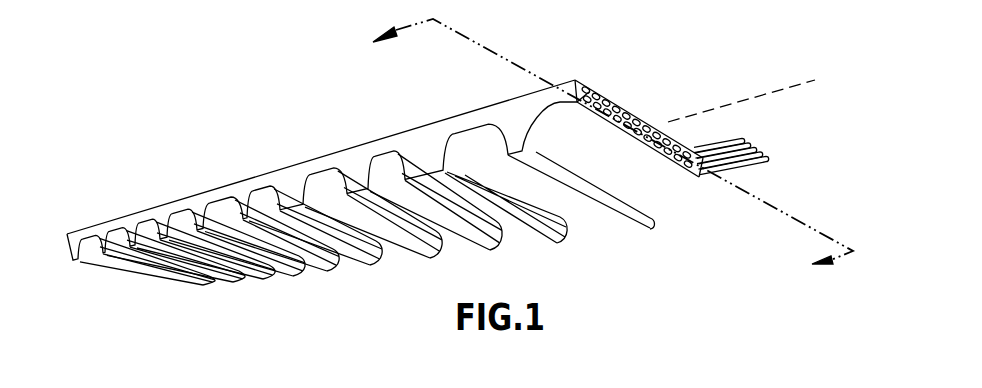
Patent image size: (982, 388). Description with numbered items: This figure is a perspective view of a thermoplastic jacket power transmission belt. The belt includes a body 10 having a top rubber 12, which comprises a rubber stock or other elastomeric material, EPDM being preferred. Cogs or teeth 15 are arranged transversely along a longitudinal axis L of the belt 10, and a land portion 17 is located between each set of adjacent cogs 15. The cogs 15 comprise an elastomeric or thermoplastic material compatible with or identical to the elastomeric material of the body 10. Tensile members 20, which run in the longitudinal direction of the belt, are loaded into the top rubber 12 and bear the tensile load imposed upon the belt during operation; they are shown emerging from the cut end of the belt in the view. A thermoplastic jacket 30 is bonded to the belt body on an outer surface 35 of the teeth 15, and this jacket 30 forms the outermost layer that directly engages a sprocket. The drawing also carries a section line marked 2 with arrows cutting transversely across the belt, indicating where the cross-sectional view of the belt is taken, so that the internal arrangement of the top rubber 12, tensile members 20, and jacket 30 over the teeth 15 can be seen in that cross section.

The belt body 10 is at (291, 147).
The thermoplastic jacket 30 is at (127, 244).
The land portion 17 is at (467, 129).
The outer surface 35 is at (520, 153).
The cogs 15 is at (668, 214).
The top rubber 12 is at (583, 84).
The tensile members 20 is at (746, 143).
The section line 2- 2 is at (600, 151).
The longitudinal axis L is at (754, 91).